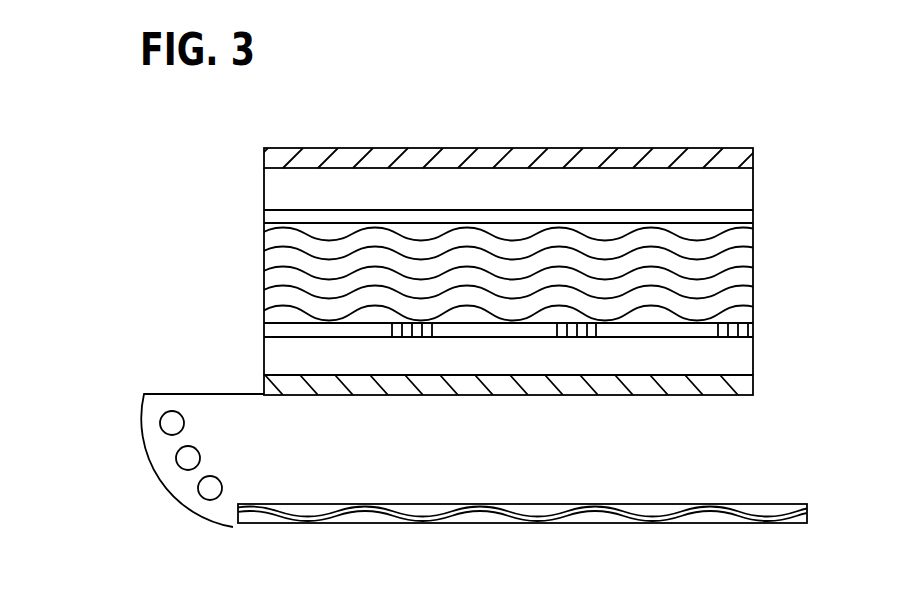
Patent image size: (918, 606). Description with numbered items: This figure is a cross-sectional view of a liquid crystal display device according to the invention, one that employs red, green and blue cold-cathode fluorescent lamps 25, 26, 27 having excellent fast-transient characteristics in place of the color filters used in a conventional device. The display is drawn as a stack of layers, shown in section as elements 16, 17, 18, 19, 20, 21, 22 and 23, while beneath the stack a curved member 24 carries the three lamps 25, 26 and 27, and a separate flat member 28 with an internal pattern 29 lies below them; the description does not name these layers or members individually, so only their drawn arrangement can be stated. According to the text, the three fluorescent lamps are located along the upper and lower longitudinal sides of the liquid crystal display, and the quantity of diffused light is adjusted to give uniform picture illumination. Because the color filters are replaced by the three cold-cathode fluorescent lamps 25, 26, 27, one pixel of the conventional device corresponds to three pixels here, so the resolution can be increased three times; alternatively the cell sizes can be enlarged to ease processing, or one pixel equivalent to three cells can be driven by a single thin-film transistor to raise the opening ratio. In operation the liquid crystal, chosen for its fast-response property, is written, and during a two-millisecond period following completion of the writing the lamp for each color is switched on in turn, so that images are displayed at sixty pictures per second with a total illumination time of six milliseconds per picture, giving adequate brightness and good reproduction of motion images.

The top protective layer 16 is at (714, 158).
The transparent layer 17 is at (733, 185).
The adhesive layer 18 is at (272, 216).
The corrugated layers 19 is at (740, 285).
The thin film layer 20 is at (272, 330).
The conductive elements 21 is at (740, 330).
The spacer layer 22 is at (727, 361).
The base substrate 23 is at (745, 387).
The curved guide 24 is at (177, 498).
The red cold-cathode fluorescent lamp 25 is at (172, 423).
The green cold-cathode fluorescent lamp 26 is at (188, 458).
The blue cold-cathode fluorescent lamp 27 is at (210, 488).
The web sheet 28 is at (490, 470).
The corrugated pattern 29 is at (667, 518).